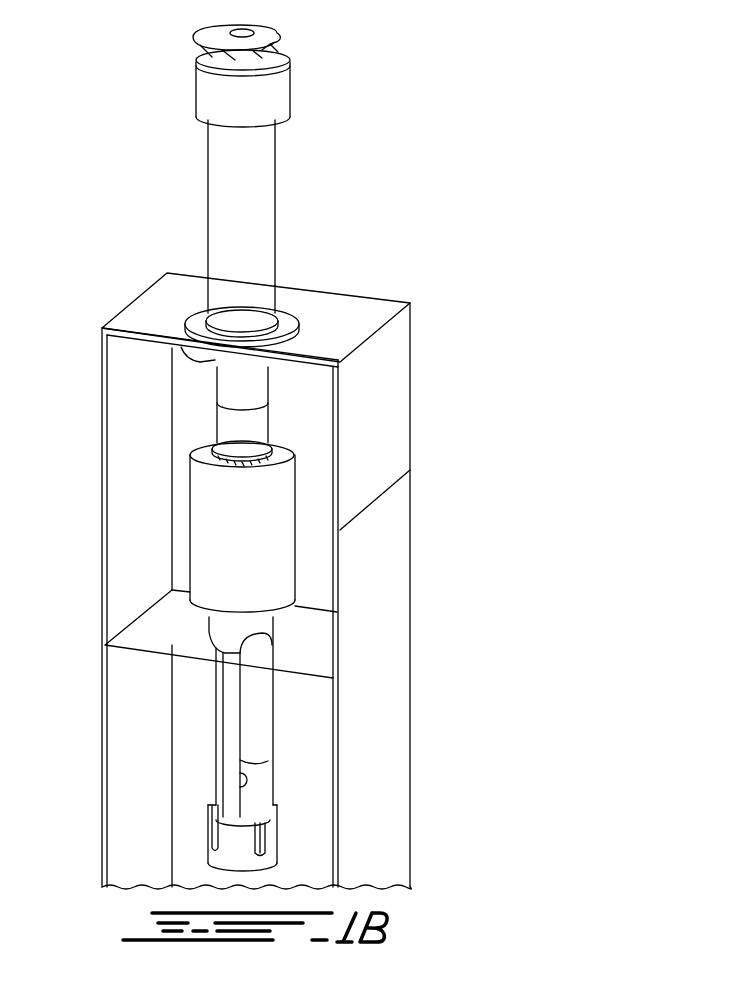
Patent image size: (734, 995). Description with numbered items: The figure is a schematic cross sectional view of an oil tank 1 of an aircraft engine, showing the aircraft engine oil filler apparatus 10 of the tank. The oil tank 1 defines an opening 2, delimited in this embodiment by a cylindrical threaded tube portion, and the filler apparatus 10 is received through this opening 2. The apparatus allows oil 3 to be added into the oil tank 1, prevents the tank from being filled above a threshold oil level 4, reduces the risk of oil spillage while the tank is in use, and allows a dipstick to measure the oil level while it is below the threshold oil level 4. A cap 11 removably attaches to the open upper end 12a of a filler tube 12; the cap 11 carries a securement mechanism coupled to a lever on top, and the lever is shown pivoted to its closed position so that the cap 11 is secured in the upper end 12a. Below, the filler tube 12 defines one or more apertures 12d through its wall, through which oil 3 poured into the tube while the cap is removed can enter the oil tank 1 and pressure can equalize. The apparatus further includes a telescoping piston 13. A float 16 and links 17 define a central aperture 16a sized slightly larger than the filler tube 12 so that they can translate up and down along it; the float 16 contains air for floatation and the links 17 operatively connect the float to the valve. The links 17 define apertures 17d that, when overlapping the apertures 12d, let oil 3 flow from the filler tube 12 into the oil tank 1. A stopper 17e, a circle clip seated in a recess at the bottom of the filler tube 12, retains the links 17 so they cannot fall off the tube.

The oil tank 1 is at (398, 718).
The opening 2 is at (210, 360).
The oil 3 is at (324, 640).
The threshold oil level 4 is at (377, 502).
The aircraft engine oil filler apparatus 10 is at (606, 181).
The cap 11 is at (300, 46).
The filler tube 12 is at (282, 212).
The open upper end 12a is at (290, 72).
The aperture 12d is at (250, 780).
The telescoping piston 13 is at (276, 850).
The float 16 is at (286, 565).
The central aperture 16a is at (275, 445).
The link 17 is at (285, 697).
The apertures 17d is at (268, 746).
The stopper 17e is at (270, 820).